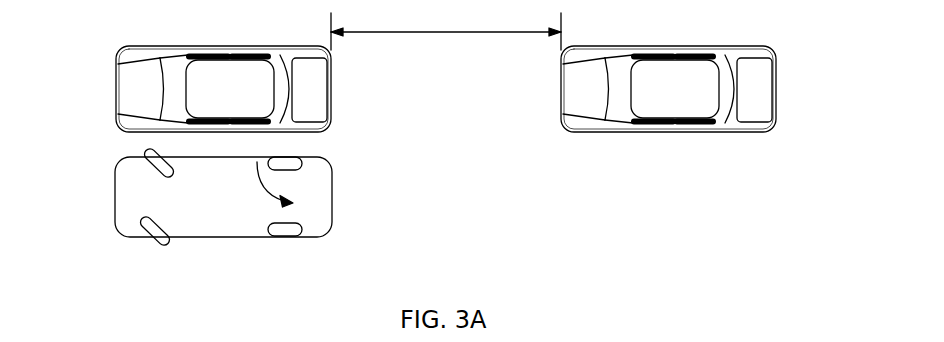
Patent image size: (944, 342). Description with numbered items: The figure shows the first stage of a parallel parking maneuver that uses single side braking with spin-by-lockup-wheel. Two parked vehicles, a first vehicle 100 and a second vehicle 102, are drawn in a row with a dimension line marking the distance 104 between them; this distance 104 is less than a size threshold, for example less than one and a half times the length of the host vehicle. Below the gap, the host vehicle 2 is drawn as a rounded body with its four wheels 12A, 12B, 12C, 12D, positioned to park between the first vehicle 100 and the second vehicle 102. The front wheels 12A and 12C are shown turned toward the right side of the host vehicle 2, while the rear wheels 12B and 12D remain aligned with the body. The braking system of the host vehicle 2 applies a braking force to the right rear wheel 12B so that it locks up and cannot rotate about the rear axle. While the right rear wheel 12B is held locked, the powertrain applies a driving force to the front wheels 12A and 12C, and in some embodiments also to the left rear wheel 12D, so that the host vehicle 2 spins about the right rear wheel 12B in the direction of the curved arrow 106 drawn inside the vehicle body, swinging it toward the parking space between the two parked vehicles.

The first vehicle 100 is at (123, 85).
The second vehicle 102 is at (767, 85).
The distance 104 is at (447, 32).
The host vehicle 2 is at (125, 198).
The front wheel 12A is at (163, 165).
The right rear wheel 12B is at (287, 165).
The front wheel 12C is at (150, 236).
The left rear wheel 12D is at (287, 232).
The arrow 106 is at (262, 192).